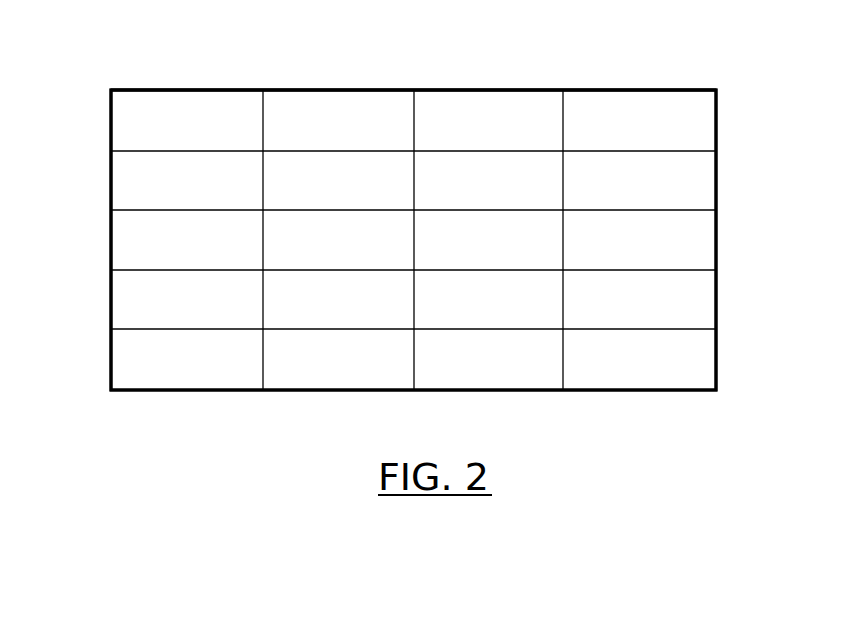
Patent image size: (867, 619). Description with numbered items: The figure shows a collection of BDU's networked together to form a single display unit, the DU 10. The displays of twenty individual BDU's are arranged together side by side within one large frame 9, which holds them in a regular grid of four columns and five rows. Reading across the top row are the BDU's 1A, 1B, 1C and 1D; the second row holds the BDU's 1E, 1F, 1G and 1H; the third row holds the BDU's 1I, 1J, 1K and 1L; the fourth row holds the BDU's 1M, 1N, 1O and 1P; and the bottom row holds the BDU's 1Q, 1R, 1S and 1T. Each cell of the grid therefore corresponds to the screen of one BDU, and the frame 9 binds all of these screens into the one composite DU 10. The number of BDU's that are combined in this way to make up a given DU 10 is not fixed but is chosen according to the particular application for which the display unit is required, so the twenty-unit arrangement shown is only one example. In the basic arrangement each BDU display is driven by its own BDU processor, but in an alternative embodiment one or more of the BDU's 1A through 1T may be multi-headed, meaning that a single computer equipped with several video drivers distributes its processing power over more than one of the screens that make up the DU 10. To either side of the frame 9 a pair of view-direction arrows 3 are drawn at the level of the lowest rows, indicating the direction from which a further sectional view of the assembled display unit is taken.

The frame 9 is at (533, 89).
The display unit 10 is at (740, 144).
The section line for FIG. 3 is at (410, 303).
The BDU 1A is at (221, 149).
The BDU 1B is at (372, 149).
The BDU 1C is at (521, 149).
The BDU 1D is at (674, 149).
The BDU 1E is at (221, 208).
The BDU 1F is at (372, 208).
The BDU 1G is at (521, 208).
The BDU 1H is at (674, 208).
The BDU 1I is at (221, 268).
The BDU 1J is at (372, 268).
The BDU 1K is at (521, 268).
The BDU 1L is at (674, 268).
The BDU 1M is at (221, 327).
The BDU 1N is at (372, 327).
The BDU 1O is at (521, 327).
The BDU 1P is at (674, 327).
The BDU 1Q is at (221, 388).
The BDU 1R is at (372, 388).
The BDU 1S is at (521, 388).
The BDU 1T is at (674, 388).